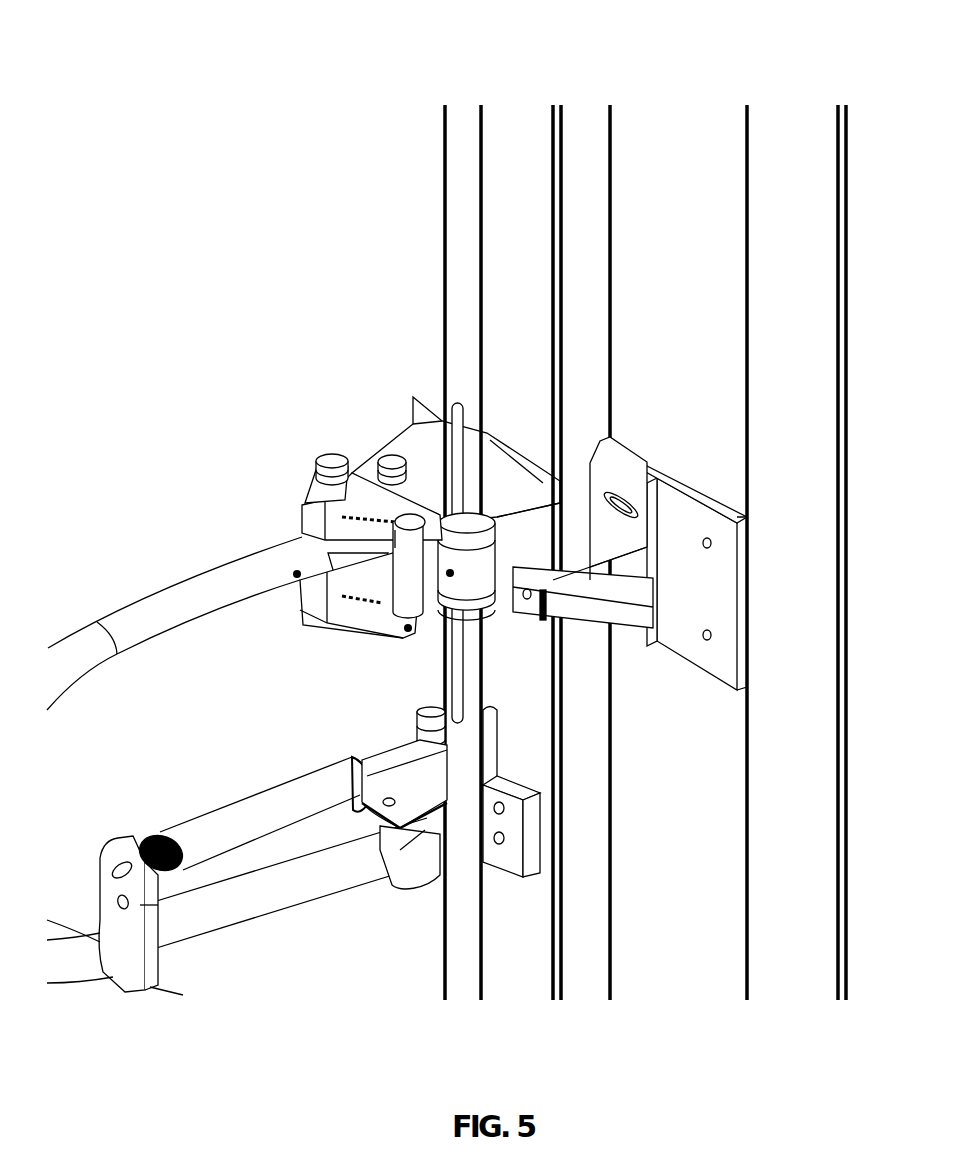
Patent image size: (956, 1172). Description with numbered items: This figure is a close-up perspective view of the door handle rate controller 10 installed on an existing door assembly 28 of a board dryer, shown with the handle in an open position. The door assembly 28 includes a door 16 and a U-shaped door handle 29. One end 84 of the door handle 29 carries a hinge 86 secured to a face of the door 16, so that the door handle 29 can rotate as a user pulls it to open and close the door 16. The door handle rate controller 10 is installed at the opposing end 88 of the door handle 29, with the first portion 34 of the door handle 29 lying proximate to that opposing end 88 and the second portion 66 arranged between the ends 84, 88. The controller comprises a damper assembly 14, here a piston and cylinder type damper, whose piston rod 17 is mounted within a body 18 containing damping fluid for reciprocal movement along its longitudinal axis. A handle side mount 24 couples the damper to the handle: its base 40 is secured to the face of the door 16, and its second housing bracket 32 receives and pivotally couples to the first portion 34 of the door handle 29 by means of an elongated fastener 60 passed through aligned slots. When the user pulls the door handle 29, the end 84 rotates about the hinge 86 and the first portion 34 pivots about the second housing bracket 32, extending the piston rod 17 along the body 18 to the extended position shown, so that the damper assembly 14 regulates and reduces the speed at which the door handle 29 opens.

The door assembly 28 is at (312, 74).
The door 16 is at (166, 314).
The second housing bracket 32 is at (440, 832).
The door handle 29 is at (193, 508).
The end of the door handle 84 is at (317, 542).
The hinge 86 is at (392, 455).
The door handle rate controller 10 is at (283, 732).
The damper assembly 14 is at (272, 786).
The body 18 is at (222, 828).
The piston rod 17 is at (405, 748).
The first portion of the door handle 34 is at (407, 842).
The elongated fastener 60 is at (388, 806).
The opposing end of the door handle 88 is at (428, 835).
The handle side mount 24 is at (500, 719).
The base 40 is at (522, 833).
The second portion of the door handle 66 is at (133, 943).